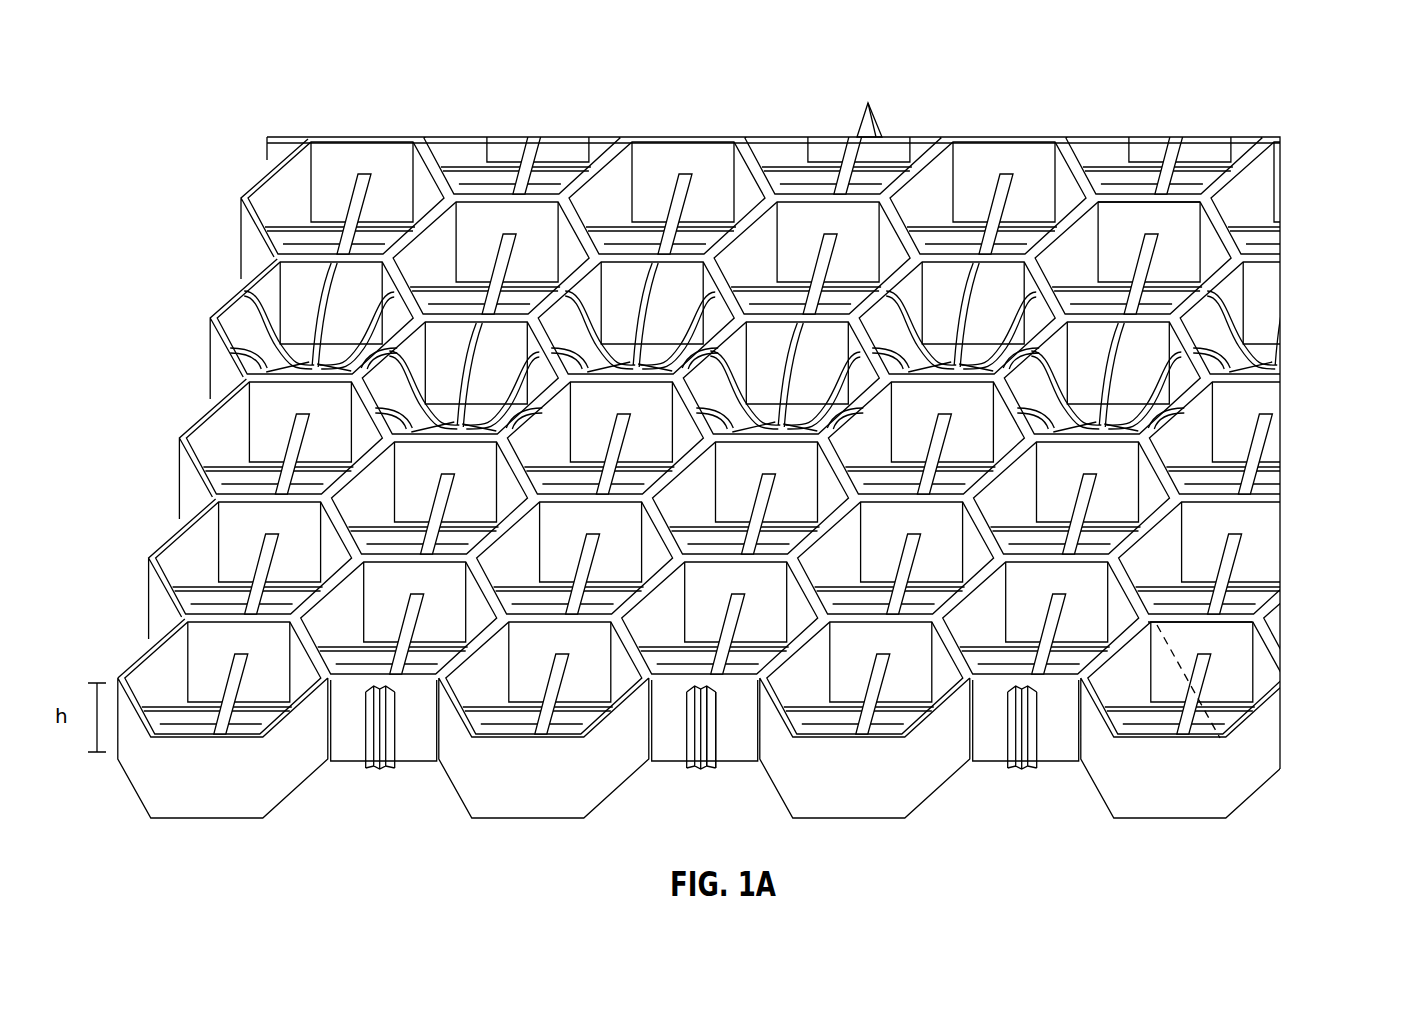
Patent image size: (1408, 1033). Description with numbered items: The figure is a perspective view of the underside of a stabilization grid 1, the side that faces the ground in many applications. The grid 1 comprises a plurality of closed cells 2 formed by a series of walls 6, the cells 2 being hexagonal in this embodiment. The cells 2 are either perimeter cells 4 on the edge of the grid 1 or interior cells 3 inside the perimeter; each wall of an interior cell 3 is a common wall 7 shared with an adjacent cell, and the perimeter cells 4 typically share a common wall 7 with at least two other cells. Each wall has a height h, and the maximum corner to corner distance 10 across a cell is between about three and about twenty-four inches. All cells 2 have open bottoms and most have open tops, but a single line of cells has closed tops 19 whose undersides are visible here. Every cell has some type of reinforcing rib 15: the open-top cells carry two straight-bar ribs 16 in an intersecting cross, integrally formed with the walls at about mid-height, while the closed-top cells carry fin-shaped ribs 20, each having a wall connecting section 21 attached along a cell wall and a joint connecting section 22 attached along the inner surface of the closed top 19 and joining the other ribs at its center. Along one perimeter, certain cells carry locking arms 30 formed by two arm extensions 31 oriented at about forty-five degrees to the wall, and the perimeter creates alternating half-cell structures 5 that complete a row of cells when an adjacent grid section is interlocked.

The stabilization grid 1 is at (370, 70).
The closed cells 2 is at (1010, 128).
The interior cells 3 is at (1208, 229).
The perimeter cells 4 is at (193, 347).
The half-cell structures 5 is at (943, 808).
The walls 6 is at (1025, 160).
The common wall 7 is at (1121, 200).
The corner to corner distance 10 is at (1177, 654).
The reinforcing rib 15 is at (383, 158).
The straight-bar ribs 16 is at (357, 196).
The closed tops 19 is at (303, 345).
The fin-shaped ribs 20 is at (258, 317).
The wall connecting section 21 is at (1112, 375).
The joint connecting section 22 is at (1148, 430).
The locking arms 30 is at (688, 782).
The arm extensions 31 is at (719, 752).